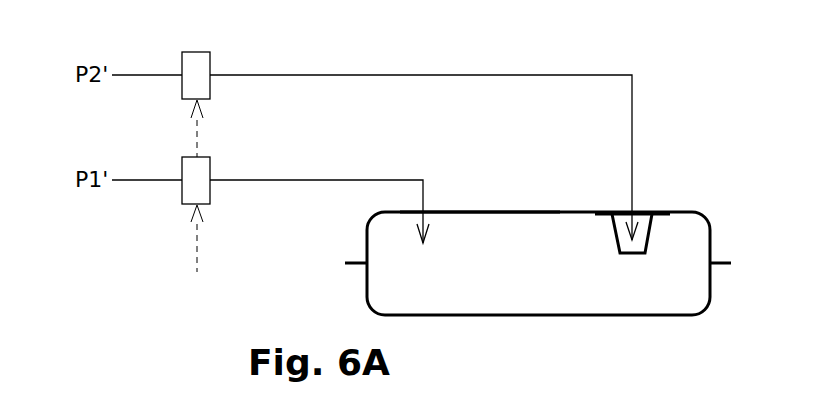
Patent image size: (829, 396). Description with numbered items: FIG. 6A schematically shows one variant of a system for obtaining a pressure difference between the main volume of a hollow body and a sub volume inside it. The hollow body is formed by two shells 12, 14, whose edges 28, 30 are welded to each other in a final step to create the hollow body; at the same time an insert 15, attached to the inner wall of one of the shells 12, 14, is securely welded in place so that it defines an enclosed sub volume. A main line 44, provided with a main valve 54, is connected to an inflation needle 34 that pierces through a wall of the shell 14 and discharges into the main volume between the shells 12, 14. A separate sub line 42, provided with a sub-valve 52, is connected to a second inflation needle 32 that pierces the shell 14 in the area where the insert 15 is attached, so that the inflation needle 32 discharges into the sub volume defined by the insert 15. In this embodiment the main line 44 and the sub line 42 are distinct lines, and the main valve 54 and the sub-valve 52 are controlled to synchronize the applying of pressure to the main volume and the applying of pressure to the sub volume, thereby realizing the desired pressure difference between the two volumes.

The shell 12 is at (538, 316).
The shell 14 is at (538, 212).
The insert 15 is at (615, 230).
The edge 28 is at (360, 262).
The edge 30 is at (349, 266).
The inflation needle 32 is at (633, 212).
The inflation needle 34 is at (423, 212).
The sub line 42 is at (378, 75).
The main line 44 is at (270, 180).
The sub-valve 52 is at (210, 61).
The main valve 54 is at (182, 193).